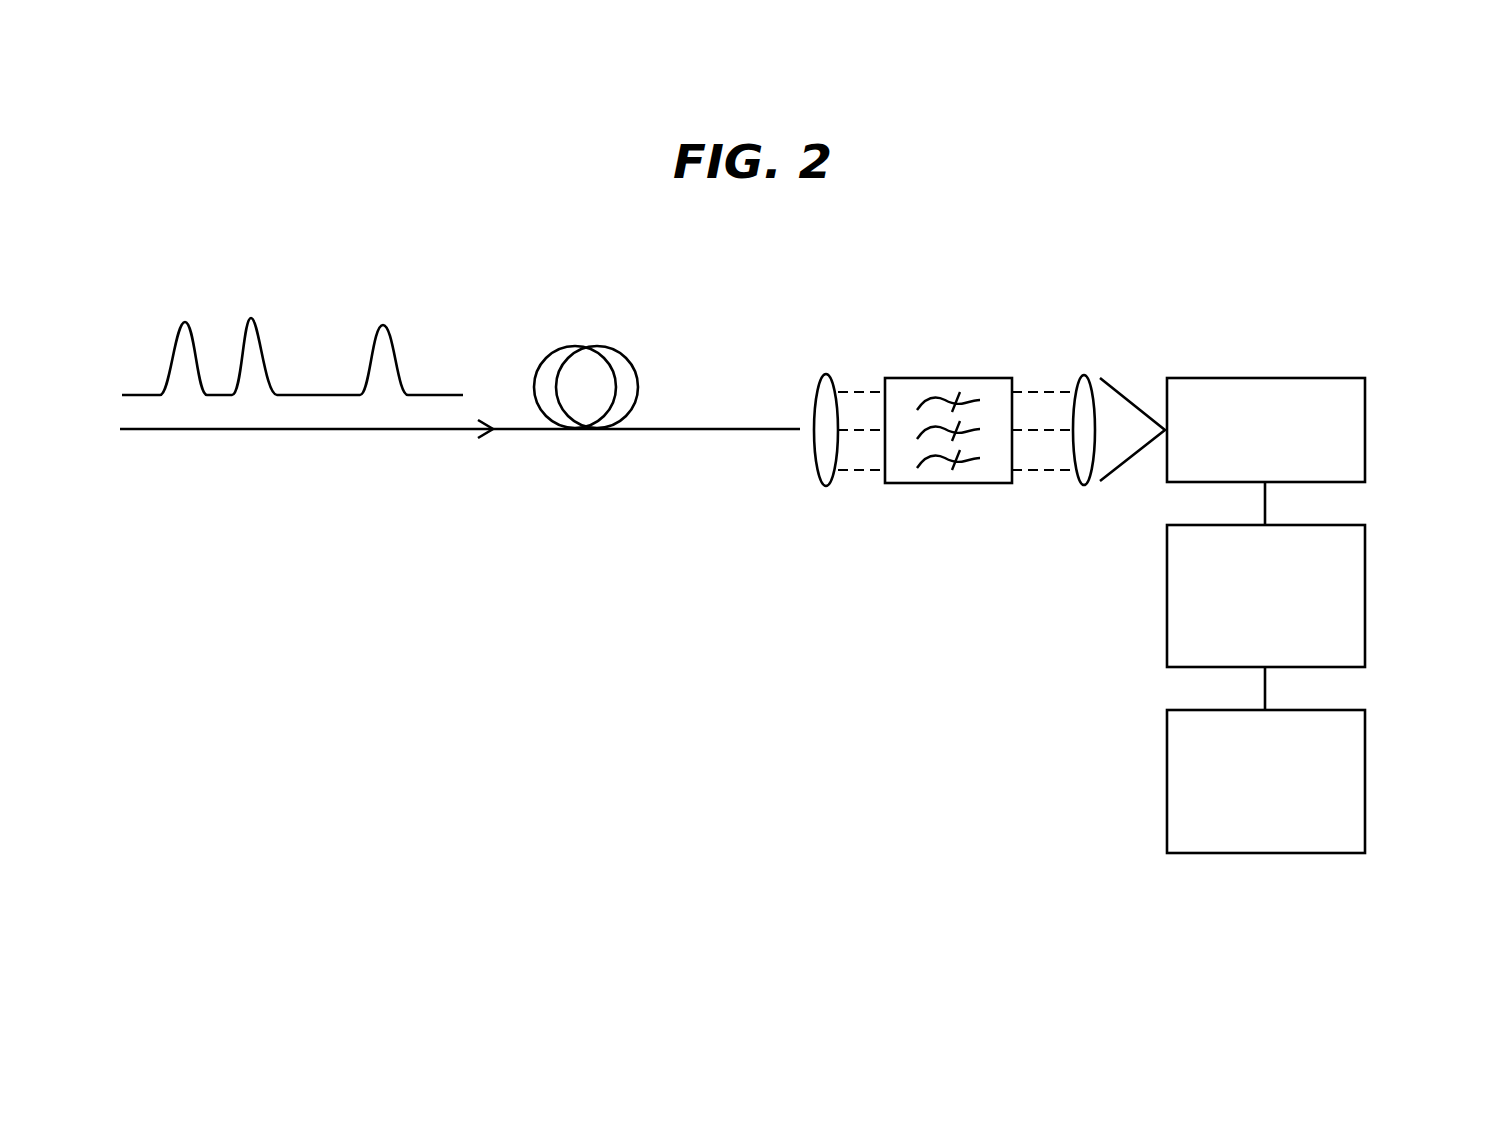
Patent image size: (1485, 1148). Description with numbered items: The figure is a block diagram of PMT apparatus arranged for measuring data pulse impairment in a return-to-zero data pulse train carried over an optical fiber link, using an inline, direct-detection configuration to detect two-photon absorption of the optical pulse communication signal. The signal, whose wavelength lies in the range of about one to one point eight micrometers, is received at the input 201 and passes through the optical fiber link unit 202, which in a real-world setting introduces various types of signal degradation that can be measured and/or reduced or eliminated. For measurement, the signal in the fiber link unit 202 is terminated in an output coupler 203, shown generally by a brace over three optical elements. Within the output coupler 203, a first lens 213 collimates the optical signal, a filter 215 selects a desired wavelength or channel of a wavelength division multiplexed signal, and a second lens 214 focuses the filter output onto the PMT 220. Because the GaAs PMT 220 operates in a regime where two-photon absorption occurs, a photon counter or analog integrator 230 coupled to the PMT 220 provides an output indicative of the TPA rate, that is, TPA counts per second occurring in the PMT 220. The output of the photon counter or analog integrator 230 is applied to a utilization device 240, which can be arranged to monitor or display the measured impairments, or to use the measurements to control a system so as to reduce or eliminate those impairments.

The input 201 is at (309, 429).
The optical fiber link unit 202 is at (639, 388).
The output coupler 203 is at (1095, 300).
The first lens 213 is at (828, 375).
The second lens 214 is at (1084, 487).
The filter 215 is at (943, 485).
The PMT 220 is at (1365, 430).
The photon counter or analog integrator 230 is at (1365, 597).
The utilization device 240 is at (1365, 782).